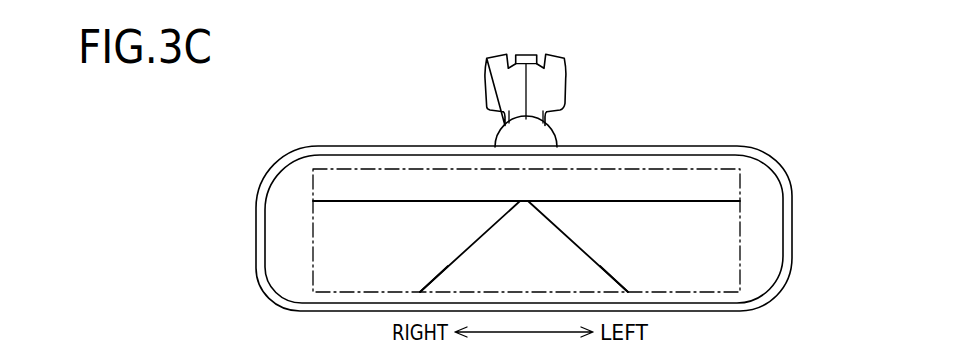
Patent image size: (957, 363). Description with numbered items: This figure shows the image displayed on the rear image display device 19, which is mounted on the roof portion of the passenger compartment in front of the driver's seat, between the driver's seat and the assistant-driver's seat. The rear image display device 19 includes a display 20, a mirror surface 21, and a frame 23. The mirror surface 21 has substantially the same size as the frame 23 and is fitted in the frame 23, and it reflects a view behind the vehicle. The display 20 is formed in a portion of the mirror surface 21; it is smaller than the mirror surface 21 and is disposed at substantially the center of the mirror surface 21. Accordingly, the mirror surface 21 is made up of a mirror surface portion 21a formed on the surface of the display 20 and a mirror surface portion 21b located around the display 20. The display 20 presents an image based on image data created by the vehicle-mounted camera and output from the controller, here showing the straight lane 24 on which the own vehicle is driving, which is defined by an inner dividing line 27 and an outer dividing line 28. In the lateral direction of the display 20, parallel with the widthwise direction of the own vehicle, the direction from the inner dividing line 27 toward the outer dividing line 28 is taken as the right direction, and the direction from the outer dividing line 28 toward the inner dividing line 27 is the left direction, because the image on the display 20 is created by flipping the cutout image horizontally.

The rear image display device 19 is at (597, 97).
The display 20 is at (616, 172).
The mirror surface 21 is at (196, 203).
The mirror surface portion 21a is at (322, 228).
The mirror surface portion 21b is at (274, 245).
The frame 23 is at (704, 152).
The lane 24 is at (570, 247).
The inner dividing line 27 is at (621, 286).
The outer dividing line 28 is at (424, 283).